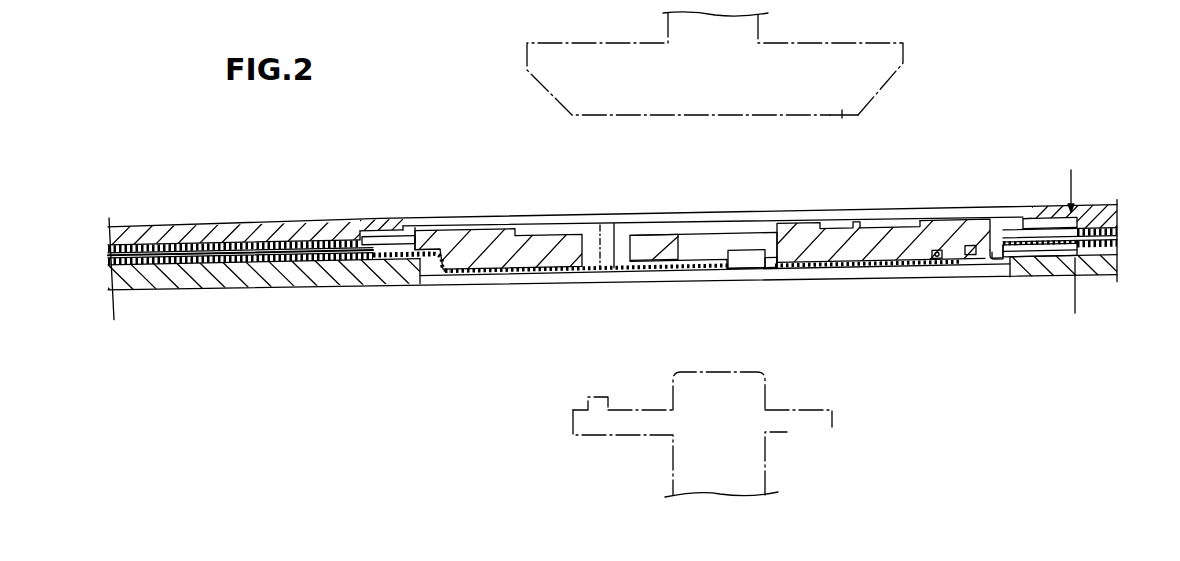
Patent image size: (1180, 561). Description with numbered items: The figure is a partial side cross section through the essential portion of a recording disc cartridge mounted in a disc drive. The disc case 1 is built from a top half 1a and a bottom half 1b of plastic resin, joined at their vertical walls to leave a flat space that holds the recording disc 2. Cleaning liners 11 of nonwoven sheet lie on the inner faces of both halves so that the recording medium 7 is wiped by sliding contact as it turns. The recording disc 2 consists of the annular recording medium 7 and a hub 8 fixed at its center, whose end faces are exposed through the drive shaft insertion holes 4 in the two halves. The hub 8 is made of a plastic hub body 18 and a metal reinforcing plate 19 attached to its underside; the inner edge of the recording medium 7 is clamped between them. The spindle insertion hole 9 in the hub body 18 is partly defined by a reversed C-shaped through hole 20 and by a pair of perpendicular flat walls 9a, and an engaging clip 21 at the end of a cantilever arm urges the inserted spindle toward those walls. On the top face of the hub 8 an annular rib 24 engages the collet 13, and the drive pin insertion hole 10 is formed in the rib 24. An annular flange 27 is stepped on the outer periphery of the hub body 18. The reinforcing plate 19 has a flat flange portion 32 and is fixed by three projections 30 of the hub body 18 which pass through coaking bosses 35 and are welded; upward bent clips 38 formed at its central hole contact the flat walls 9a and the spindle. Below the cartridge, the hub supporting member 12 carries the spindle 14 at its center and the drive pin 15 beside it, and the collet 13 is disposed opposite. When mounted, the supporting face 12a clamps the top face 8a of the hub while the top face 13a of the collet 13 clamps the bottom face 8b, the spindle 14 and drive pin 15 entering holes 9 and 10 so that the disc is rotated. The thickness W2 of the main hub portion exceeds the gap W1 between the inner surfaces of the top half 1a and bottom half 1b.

The disc case 1 is at (178, 297).
The top half 1a is at (193, 228).
The bottom half 1b is at (253, 285).
The recording disc 2 is at (480, 282).
The drive shaft insertion holes 4 is at (412, 218).
The recording medium 7 is at (107, 257).
The hub 8 is at (947, 228).
The top face of the hub 8a is at (992, 234).
The bottom face of the hub 8b is at (843, 268).
The spindle insertion hole 9 is at (742, 252).
The vertical flat walls 9a is at (773, 233).
The drive pin insertion hole 10 is at (604, 225).
The cleaning liners 11 is at (107, 247).
The hub supporting member 12 is at (789, 434).
The supporting face 12a is at (817, 402).
The collet 13 is at (905, 58).
The top face of the collet 13a is at (846, 118).
The spindle 14 is at (666, 393).
The drive pin 15 is at (585, 401).
The hub body 18 is at (488, 235).
The reinforcing plate 19 is at (520, 283).
The through hole 20 is at (622, 235).
The engaging clip 21 is at (652, 238).
The annular rib 24 is at (832, 222).
The annular flange 27 is at (1051, 235).
The projections 30 is at (950, 262).
The flat flange portion 32 is at (1053, 252).
The coaking bosses 35 is at (969, 260).
The bent clips 38 is at (768, 269).
The gap width W1 is at (1073, 193).
The hub thickness W2 is at (984, 266).